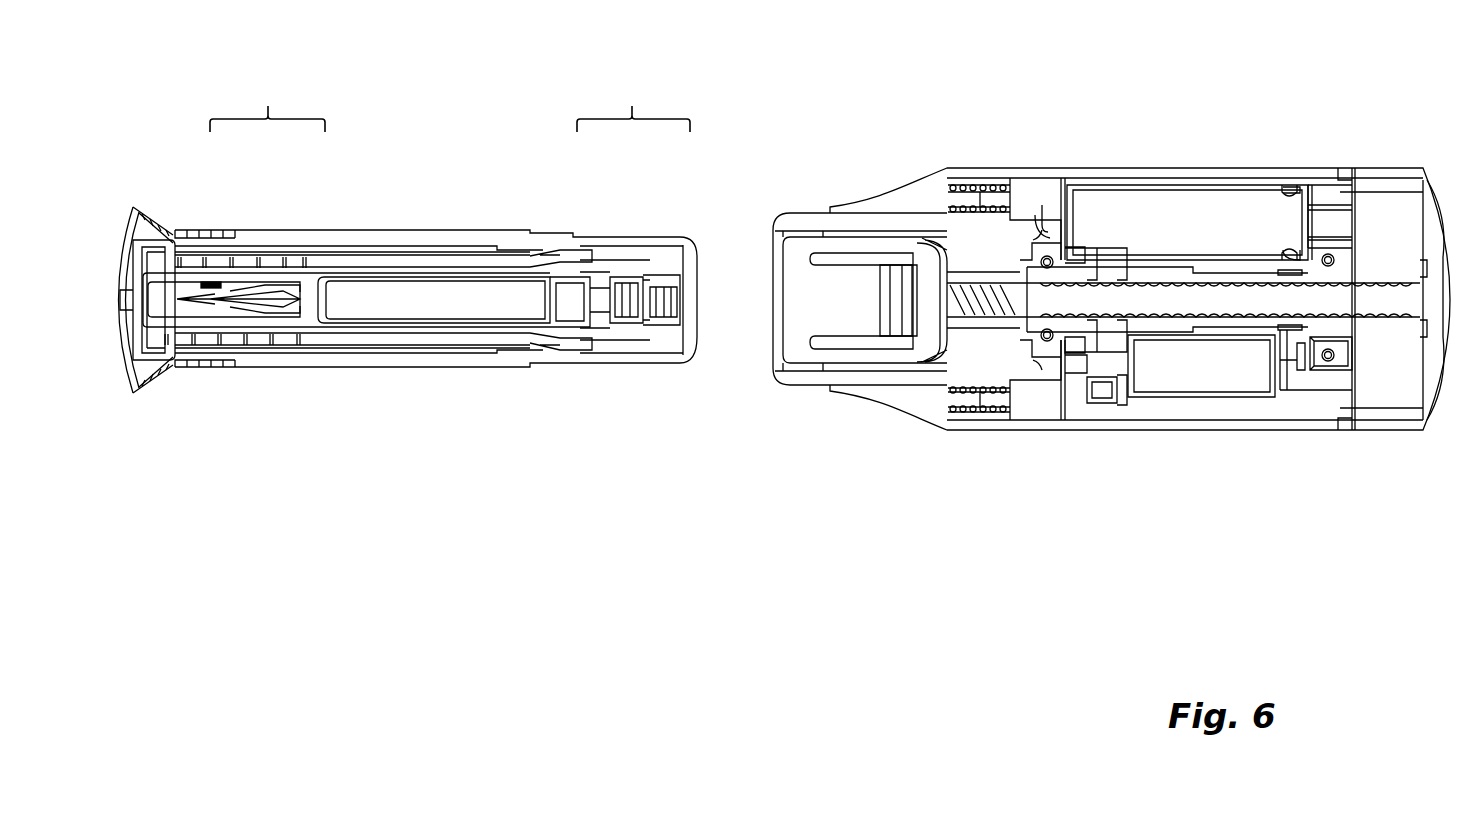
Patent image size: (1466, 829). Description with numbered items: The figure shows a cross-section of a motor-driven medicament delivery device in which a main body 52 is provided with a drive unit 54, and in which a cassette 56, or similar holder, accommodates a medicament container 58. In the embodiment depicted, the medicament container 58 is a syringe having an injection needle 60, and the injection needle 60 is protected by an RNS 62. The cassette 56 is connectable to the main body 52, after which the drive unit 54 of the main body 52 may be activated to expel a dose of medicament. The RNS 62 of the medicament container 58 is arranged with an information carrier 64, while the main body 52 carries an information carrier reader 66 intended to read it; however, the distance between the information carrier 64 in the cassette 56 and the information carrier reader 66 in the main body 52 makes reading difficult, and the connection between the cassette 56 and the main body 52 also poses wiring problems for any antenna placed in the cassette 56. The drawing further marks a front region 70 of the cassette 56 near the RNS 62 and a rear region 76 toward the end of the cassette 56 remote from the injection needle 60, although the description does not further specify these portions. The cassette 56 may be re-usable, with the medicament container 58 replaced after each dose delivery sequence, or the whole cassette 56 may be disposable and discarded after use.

The main body 52 is at (1111, 287).
The drive unit 54 is at (1194, 378).
The cassette 56 is at (408, 281).
The medicament container 58 is at (490, 306).
The injection needle 60 is at (184, 300).
The RNS 62 is at (166, 288).
The information carrier 64 is at (218, 283).
The information carrier reader 66 is at (1087, 197).
The front section 70 is at (267, 100).
The rear section 76 is at (633, 100).